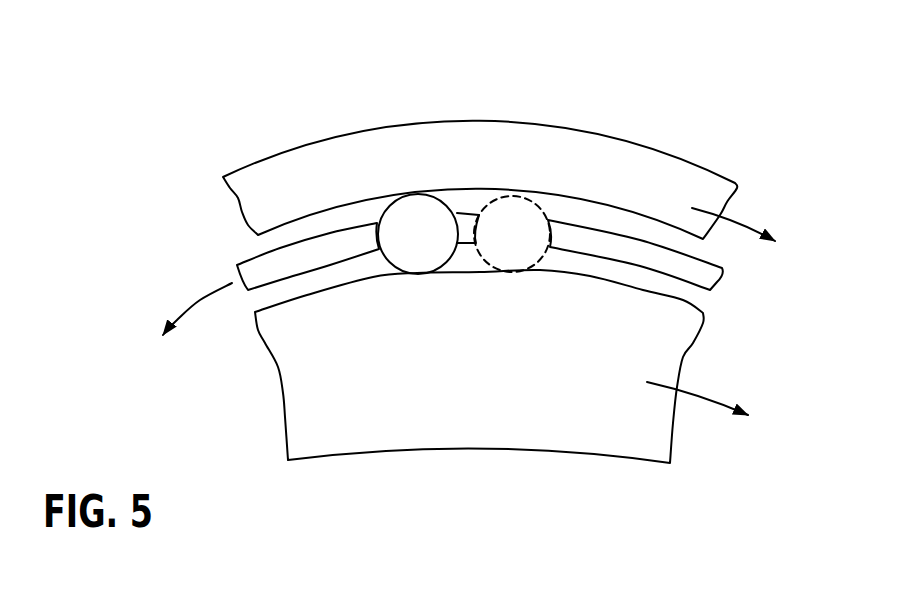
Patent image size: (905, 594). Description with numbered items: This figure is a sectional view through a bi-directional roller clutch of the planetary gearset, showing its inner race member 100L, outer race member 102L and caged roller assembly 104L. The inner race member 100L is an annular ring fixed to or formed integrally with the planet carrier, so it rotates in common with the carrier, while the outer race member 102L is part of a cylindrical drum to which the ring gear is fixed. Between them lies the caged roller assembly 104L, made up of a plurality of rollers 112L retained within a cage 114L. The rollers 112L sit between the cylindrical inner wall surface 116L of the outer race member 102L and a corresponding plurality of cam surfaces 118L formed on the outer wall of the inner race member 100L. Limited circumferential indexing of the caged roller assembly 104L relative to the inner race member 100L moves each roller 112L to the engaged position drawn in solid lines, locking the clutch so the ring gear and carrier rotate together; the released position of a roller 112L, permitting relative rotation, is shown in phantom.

The inner race member 100L is at (432, 423).
The outer race member 102L is at (680, 173).
The caged roller assembly 104L is at (647, 248).
The rollers 112L is at (418, 208).
The cage 114L is at (308, 252).
The cylindrical inner wall surface 116L is at (583, 198).
The cam surfaces 118L is at (507, 273).